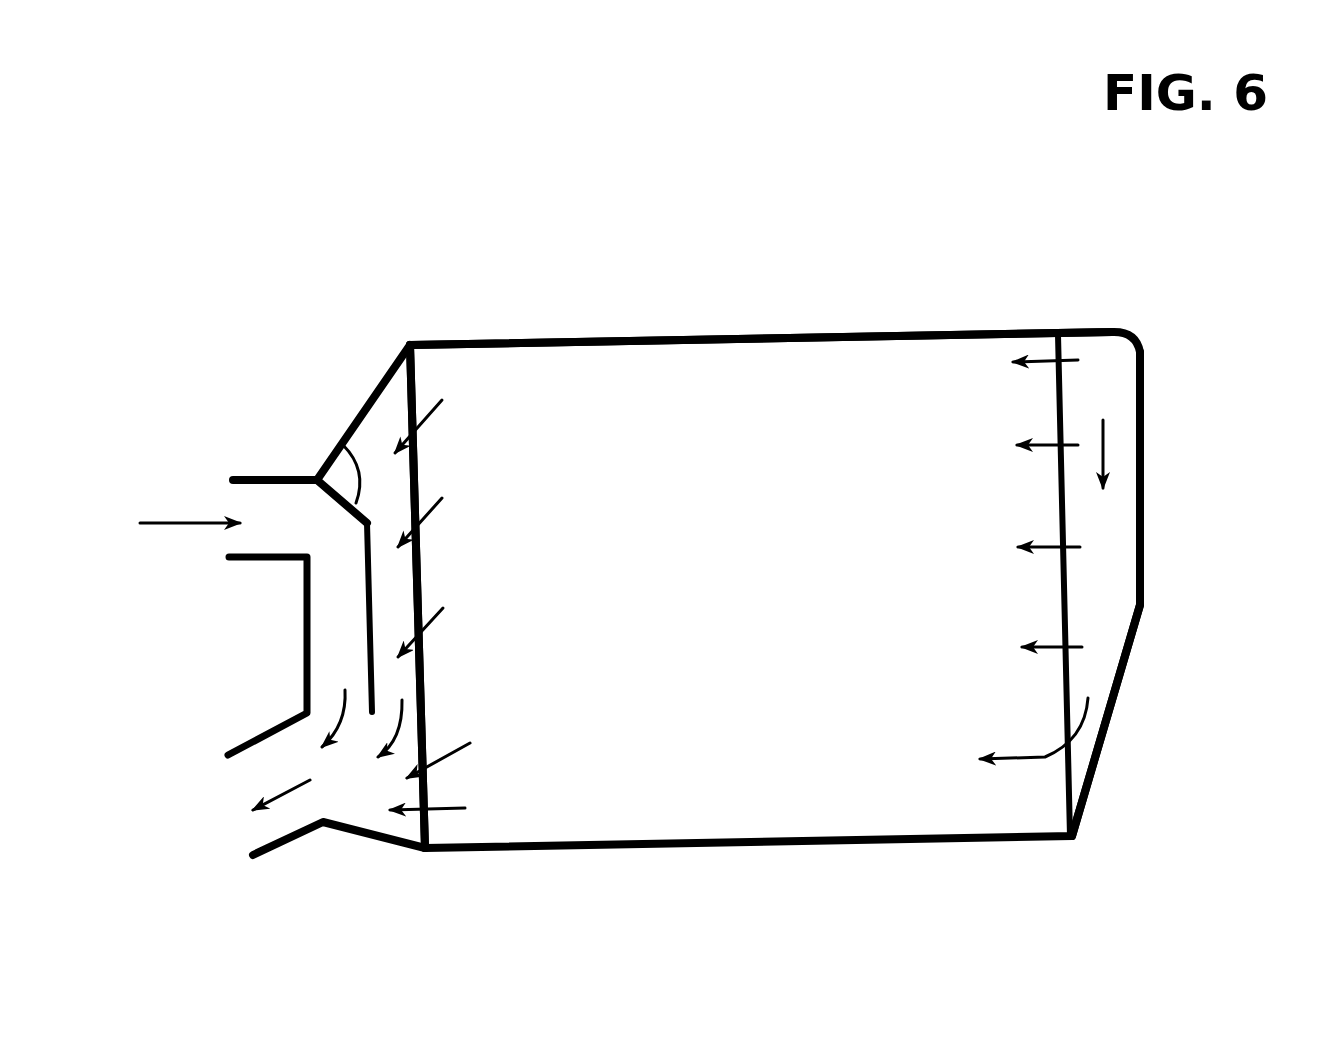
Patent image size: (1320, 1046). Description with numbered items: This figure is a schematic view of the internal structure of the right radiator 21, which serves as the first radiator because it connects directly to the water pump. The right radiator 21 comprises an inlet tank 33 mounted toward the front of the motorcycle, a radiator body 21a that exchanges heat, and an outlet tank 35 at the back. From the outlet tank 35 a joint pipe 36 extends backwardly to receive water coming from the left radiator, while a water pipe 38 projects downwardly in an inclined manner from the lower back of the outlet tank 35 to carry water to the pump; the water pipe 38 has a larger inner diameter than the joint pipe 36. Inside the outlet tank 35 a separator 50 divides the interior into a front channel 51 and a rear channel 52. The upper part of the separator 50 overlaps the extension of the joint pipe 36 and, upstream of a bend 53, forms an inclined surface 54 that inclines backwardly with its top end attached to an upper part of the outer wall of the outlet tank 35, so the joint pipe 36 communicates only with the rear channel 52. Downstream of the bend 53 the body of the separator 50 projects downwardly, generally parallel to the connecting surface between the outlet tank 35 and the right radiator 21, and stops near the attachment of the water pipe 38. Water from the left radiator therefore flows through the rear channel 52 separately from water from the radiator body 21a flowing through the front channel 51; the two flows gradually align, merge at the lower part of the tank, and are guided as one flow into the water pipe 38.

The right radiator 21 is at (1100, 286).
The radiator body 21a is at (733, 358).
The inlet tank 33 is at (1130, 517).
The outlet tank 35 is at (350, 417).
The joint pipe 36 is at (252, 478).
The water pipe 38 is at (287, 842).
The separator 50 is at (380, 598).
The front channel 51 is at (400, 675).
The rear channel 52 is at (320, 640).
The bend 53 is at (367, 513).
The inclined surface 54 is at (343, 445).